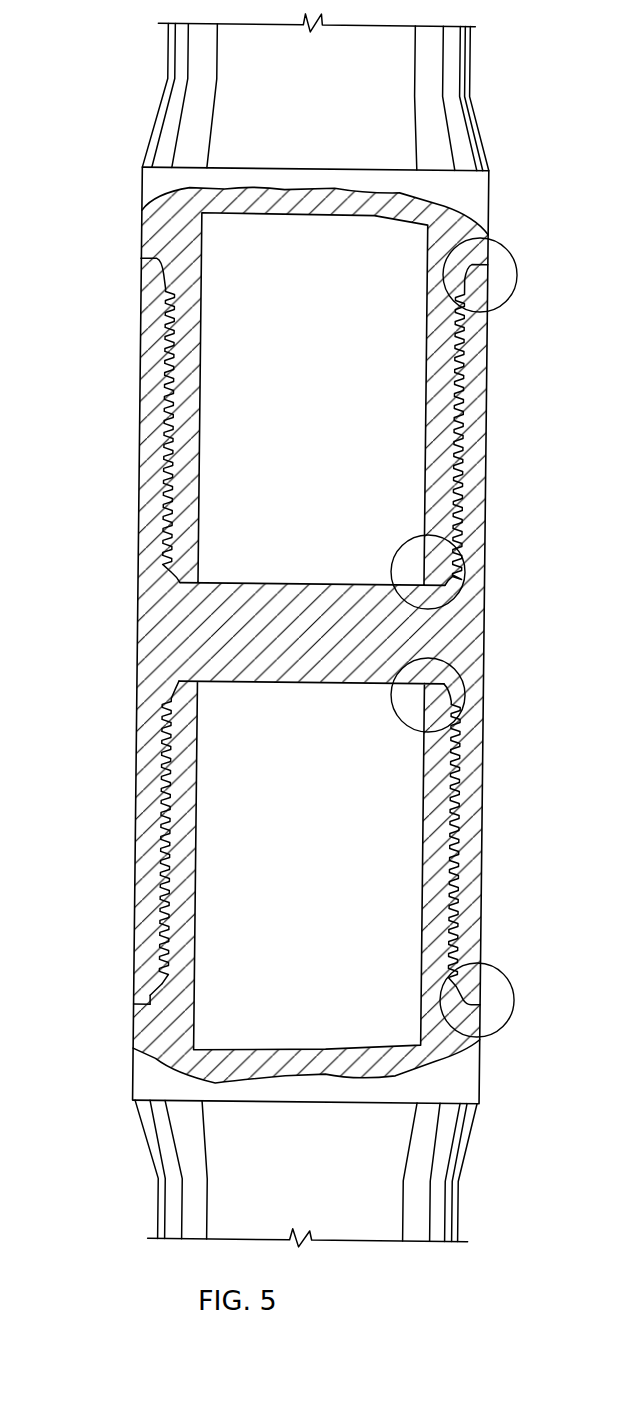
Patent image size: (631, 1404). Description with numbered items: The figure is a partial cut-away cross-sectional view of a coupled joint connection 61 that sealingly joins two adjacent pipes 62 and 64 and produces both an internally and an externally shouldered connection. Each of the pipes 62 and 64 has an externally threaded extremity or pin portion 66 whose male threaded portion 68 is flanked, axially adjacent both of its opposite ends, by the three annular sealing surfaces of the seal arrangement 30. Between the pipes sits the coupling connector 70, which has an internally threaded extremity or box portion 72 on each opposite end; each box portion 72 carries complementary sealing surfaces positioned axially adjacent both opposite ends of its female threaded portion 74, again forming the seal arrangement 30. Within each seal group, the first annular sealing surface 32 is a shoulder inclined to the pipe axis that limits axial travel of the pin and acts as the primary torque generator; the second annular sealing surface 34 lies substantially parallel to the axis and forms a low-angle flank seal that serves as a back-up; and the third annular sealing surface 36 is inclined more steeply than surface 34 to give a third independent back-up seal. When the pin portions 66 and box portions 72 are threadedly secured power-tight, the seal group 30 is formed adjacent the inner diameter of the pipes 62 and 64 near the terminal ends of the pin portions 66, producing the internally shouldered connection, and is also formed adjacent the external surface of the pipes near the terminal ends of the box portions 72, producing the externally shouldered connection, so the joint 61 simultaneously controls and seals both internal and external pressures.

The seal arrangement 30 is at (503, 238).
The first annular sealing surface 32 is at (139, 1009).
The second annular sealing surface 34 is at (153, 1003).
The third annular sealing surface 36 is at (156, 985).
The coupled joint connection 61 is at (127, 79).
The pipe 62 is at (404, 83).
The pipe 64 is at (433, 1187).
The pin portion 66 is at (443, 348).
The male threaded portion 68 is at (455, 430).
The coupling connector 70 is at (487, 549).
The box portion 72 is at (153, 430).
The female threaded portion 74 is at (170, 345).